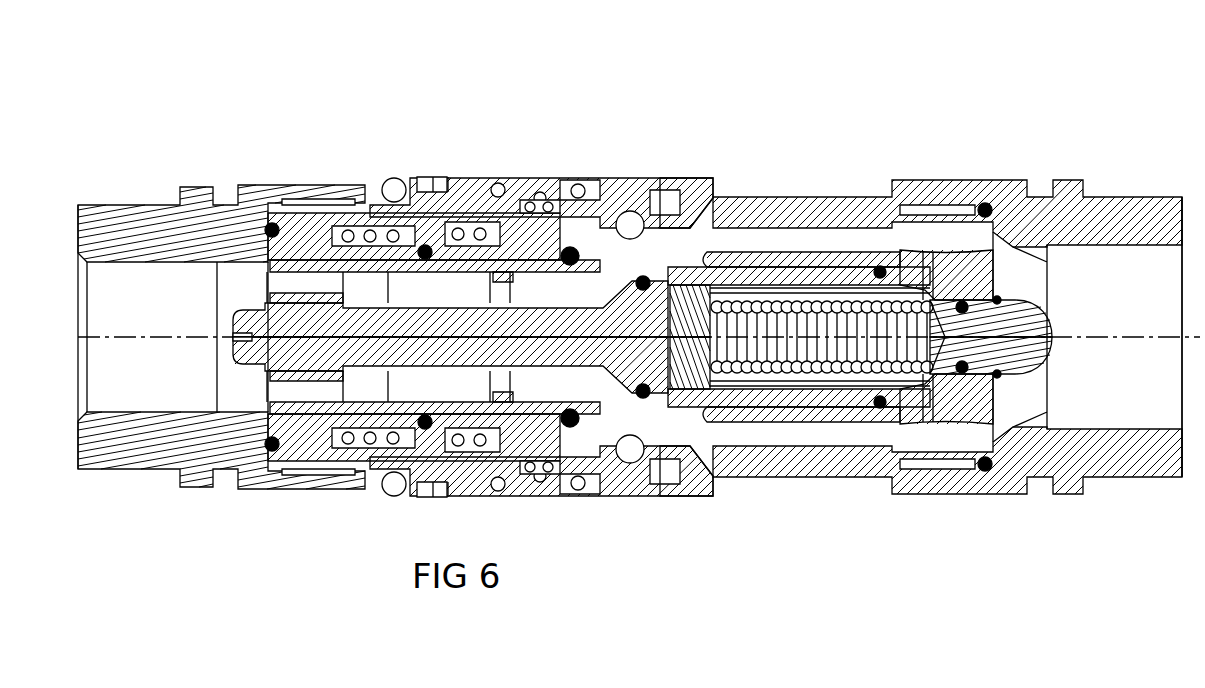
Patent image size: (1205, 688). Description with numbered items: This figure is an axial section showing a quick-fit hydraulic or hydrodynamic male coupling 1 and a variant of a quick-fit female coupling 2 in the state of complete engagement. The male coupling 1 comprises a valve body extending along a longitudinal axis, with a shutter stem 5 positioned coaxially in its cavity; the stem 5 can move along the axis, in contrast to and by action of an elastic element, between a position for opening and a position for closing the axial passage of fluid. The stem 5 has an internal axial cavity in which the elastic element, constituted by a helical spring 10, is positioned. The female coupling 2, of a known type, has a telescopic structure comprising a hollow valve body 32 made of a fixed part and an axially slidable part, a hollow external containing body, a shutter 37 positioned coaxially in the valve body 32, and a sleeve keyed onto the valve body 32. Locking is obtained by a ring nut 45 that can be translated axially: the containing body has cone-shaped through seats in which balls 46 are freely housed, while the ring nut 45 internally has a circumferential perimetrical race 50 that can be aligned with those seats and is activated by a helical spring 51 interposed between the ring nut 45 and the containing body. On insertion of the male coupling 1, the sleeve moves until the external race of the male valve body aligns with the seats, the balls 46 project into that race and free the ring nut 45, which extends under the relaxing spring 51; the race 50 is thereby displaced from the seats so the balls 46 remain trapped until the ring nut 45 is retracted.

The male coupling 1 is at (830, 190).
The female coupling 2 is at (397, 158).
The shutter stem 5 is at (780, 387).
The helical spring 10 is at (815, 345).
The hollow valve body 32 is at (453, 277).
The shutter 37 is at (417, 372).
The ring nut 45 is at (603, 161).
The ball bearing 46 is at (630, 220).
The circumferential perimetrical race 50 is at (683, 198).
The helical spring 51 is at (578, 178).